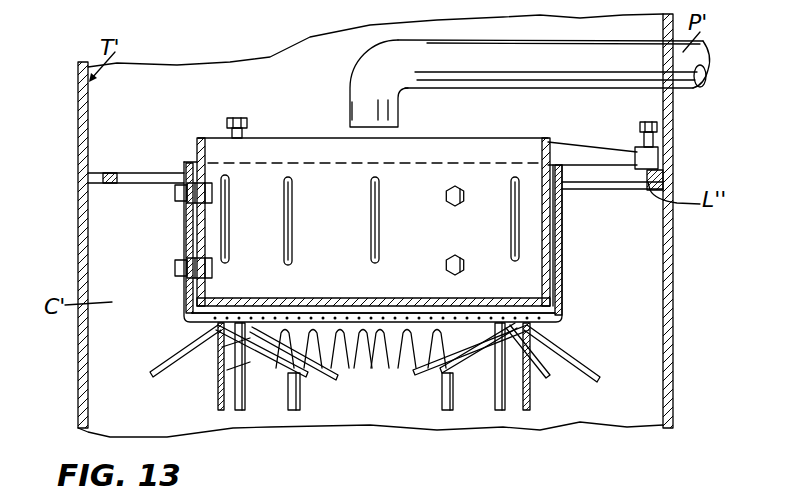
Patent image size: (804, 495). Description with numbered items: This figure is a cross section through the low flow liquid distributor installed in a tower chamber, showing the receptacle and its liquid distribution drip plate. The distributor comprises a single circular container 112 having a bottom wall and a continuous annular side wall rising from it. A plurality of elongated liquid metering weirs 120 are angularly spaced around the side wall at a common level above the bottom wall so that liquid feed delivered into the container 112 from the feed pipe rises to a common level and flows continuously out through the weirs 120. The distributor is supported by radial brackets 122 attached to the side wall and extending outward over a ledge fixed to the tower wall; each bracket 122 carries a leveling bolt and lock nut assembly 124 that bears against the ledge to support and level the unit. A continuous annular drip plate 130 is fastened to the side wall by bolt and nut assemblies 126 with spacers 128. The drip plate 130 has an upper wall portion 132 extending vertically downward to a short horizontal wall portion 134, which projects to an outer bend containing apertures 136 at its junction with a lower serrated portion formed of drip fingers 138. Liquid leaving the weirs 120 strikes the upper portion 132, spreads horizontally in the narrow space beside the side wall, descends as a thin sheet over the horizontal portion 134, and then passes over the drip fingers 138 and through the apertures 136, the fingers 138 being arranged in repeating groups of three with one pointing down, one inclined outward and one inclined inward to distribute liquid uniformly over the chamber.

The container 112 is at (304, 132).
The liquid metering weirs 120 is at (371, 212).
The radial brackets 122 is at (647, 158).
The leveling bolt and lock nut assembly 124 is at (237, 118).
The bolt and nut assemblies 126 is at (175, 267).
The spacers 128 is at (187, 176).
The liquid distribution drip plate 130 is at (568, 248).
The upper wall portion 132 is at (562, 210).
The horizontal wall portion 134 is at (562, 304).
The apertures 136 is at (214, 332).
The drip fingers 138 is at (443, 392).